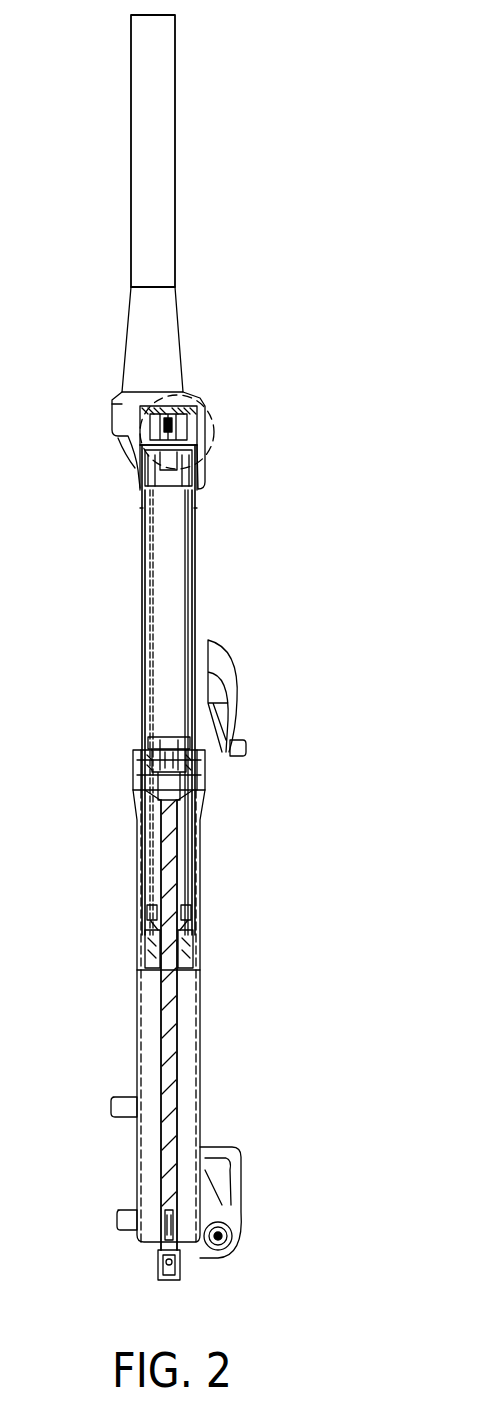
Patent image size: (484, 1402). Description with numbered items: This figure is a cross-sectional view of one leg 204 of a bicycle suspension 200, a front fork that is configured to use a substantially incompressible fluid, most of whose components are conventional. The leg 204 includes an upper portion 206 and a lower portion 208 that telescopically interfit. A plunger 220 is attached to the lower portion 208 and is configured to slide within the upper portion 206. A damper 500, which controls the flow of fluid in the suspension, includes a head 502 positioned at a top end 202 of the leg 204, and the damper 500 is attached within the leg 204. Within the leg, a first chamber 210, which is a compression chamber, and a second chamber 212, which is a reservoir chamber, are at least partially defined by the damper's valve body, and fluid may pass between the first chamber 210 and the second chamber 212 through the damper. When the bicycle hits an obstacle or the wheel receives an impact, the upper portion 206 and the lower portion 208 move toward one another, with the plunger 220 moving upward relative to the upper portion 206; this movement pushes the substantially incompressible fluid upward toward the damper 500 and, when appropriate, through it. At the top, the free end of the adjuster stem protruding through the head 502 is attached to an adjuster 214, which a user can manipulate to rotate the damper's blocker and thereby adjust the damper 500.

The bicycle suspension 200 is at (124, 645).
The top end 202 is at (218, 464).
The leg 204 is at (212, 878).
The upper portion 206 is at (197, 612).
The lower portion 208 is at (201, 985).
The first chamber 210 is at (177, 555).
The second chamber 212 is at (141, 580).
The adjuster 214 is at (192, 403).
The plunger 220 is at (186, 742).
The damper 500 is at (116, 481).
The head 502 is at (205, 410).